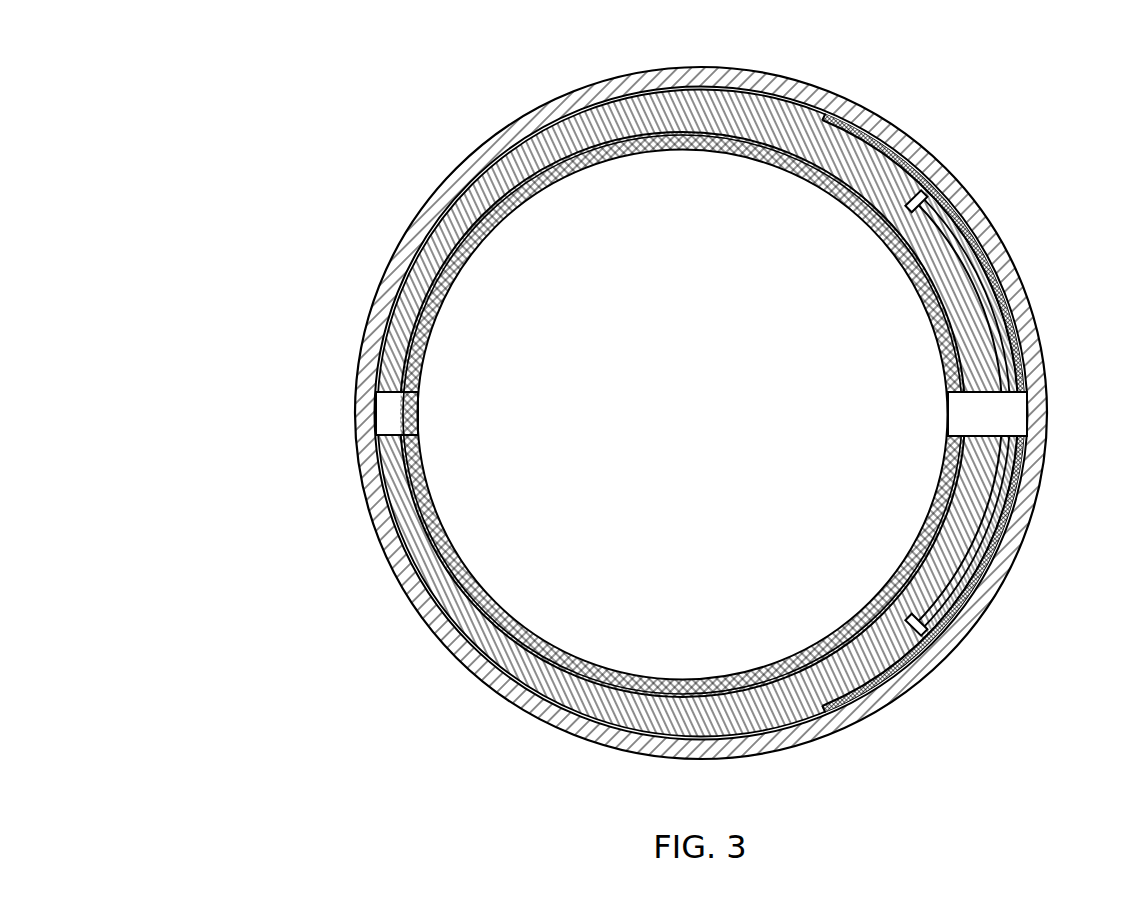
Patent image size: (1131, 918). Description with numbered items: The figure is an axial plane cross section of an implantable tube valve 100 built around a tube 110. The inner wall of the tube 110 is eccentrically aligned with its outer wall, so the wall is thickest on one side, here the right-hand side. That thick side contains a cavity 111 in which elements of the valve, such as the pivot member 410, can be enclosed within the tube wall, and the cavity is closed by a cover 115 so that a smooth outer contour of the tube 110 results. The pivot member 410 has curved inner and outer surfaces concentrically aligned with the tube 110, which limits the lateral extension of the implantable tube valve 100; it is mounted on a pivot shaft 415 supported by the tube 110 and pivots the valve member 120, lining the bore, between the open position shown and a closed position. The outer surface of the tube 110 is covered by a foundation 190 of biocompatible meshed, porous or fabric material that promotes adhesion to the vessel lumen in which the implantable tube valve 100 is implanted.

The implantable tube valve 100 is at (291, 264).
The tube 110 is at (727, 118).
The cavity 111 is at (922, 205).
The cover 115 is at (998, 292).
The valve member 120 is at (478, 597).
The foundation 190 is at (470, 172).
The pivot member 410 is at (975, 525).
The pivot shaft 415 is at (962, 418).